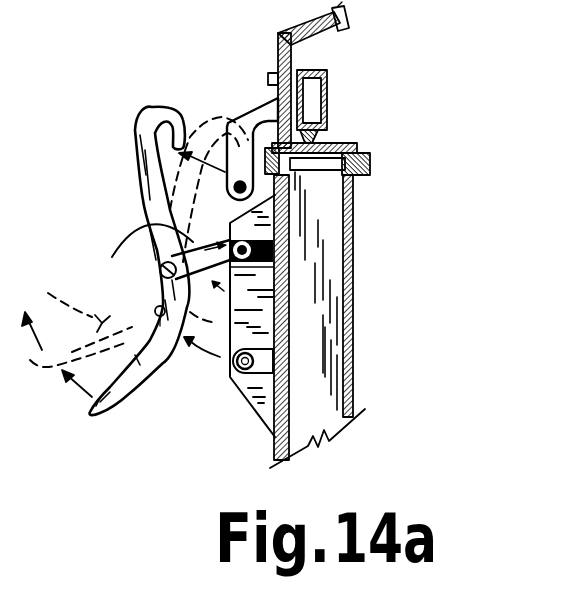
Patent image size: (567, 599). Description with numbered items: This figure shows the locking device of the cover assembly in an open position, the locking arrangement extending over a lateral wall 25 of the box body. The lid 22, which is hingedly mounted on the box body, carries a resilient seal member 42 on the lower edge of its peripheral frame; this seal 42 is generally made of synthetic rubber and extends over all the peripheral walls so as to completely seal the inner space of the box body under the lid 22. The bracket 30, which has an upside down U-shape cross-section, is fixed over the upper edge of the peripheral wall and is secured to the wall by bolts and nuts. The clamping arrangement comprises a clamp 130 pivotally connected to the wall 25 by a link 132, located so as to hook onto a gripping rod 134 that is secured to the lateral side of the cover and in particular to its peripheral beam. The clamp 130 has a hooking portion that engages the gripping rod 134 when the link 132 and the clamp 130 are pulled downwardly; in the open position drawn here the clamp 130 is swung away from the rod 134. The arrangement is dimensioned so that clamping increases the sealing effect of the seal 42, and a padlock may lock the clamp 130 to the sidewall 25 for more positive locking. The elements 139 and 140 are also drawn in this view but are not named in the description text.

The lid 22 is at (336, 32).
The lateral wall 25 is at (357, 207).
The bracket 30 is at (360, 147).
The resilient seal member 42 is at (340, 129).
The clamp 130 is at (143, 337).
The link 132 is at (152, 266).
The gripping rod 134 is at (253, 141).
The pivot pin 139 is at (234, 377).
The mounting plate 140 is at (251, 404).